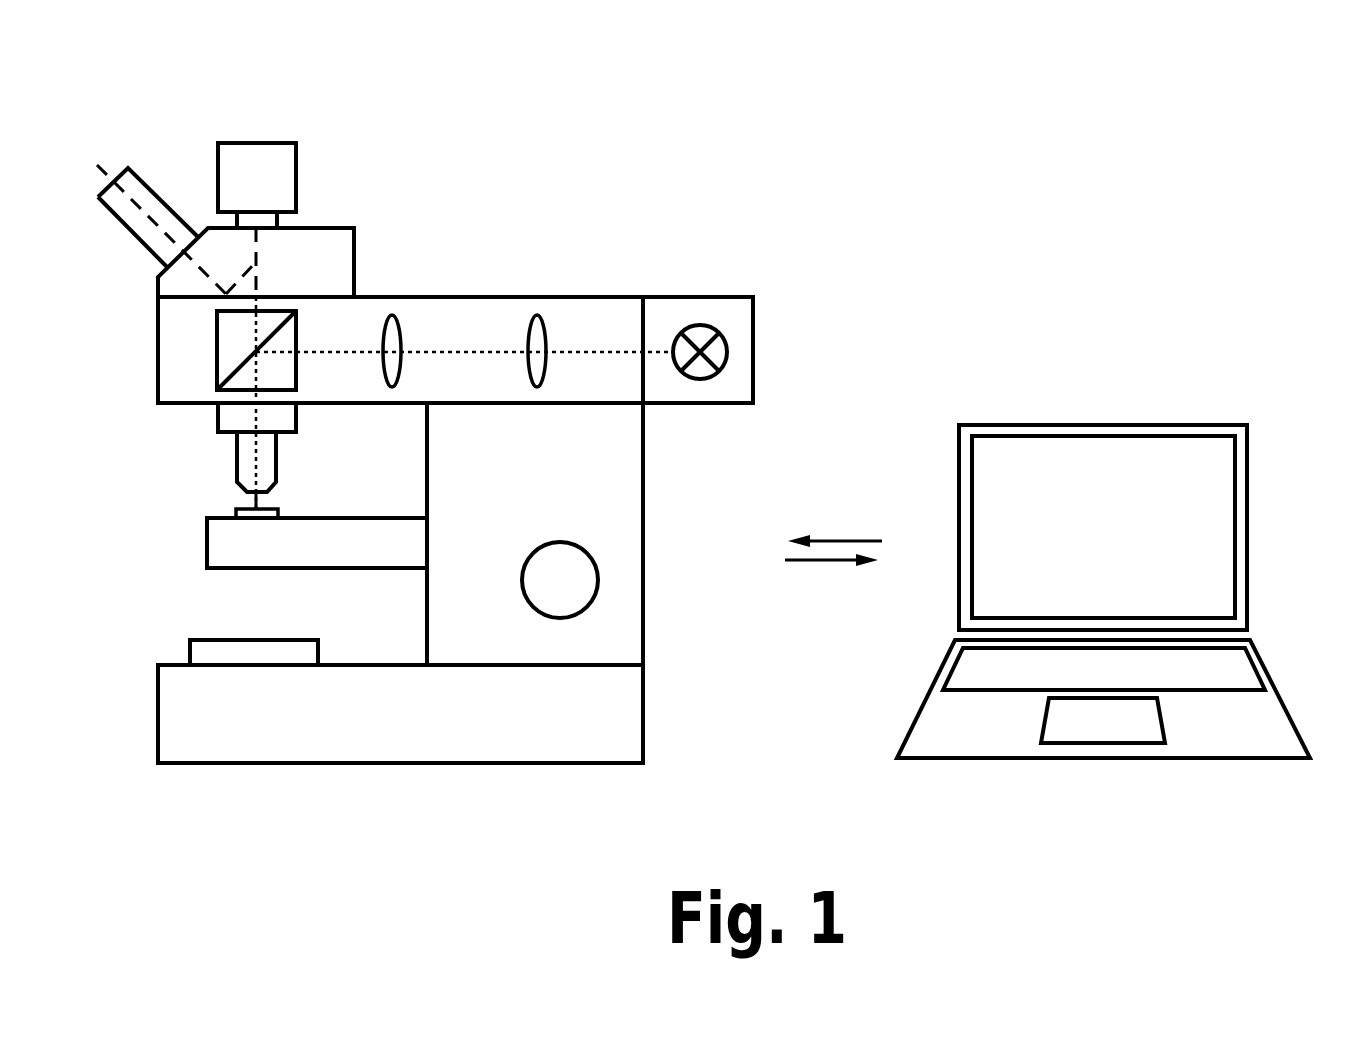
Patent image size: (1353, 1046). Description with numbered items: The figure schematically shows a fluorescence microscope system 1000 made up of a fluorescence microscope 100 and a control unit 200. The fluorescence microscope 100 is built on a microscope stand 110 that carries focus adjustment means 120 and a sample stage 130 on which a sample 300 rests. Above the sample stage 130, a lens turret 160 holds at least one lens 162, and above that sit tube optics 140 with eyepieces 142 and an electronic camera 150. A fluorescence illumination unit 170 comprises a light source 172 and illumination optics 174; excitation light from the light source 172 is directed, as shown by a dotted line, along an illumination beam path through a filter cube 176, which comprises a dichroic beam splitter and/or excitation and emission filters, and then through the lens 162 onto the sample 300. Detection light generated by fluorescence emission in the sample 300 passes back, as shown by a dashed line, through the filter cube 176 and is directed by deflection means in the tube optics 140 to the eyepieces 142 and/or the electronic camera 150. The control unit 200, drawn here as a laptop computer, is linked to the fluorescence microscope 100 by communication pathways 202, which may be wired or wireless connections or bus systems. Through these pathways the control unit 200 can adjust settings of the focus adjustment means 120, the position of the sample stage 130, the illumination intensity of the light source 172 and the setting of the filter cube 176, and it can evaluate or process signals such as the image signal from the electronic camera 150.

The fluorescence microscope system 1000 is at (970, 151).
The fluorescence microscope 100 is at (480, 185).
The microscope stand 110 is at (645, 633).
The focus adjustment means 120 is at (543, 545).
The sample stage 130 is at (207, 573).
The sample 300 is at (237, 510).
The tube optics 140 is at (313, 228).
The eyepieces 142 is at (127, 165).
The electronic camera 150 is at (252, 143).
The lens turret 160 is at (297, 413).
The lens 162 is at (277, 452).
The fluorescence illumination unit 170 is at (690, 297).
The light source 172 is at (720, 330).
The illumination optics 174 is at (388, 300).
The filter cube 176 is at (217, 363).
The control unit 200 is at (1078, 385).
The communication pathways 202 is at (826, 513).